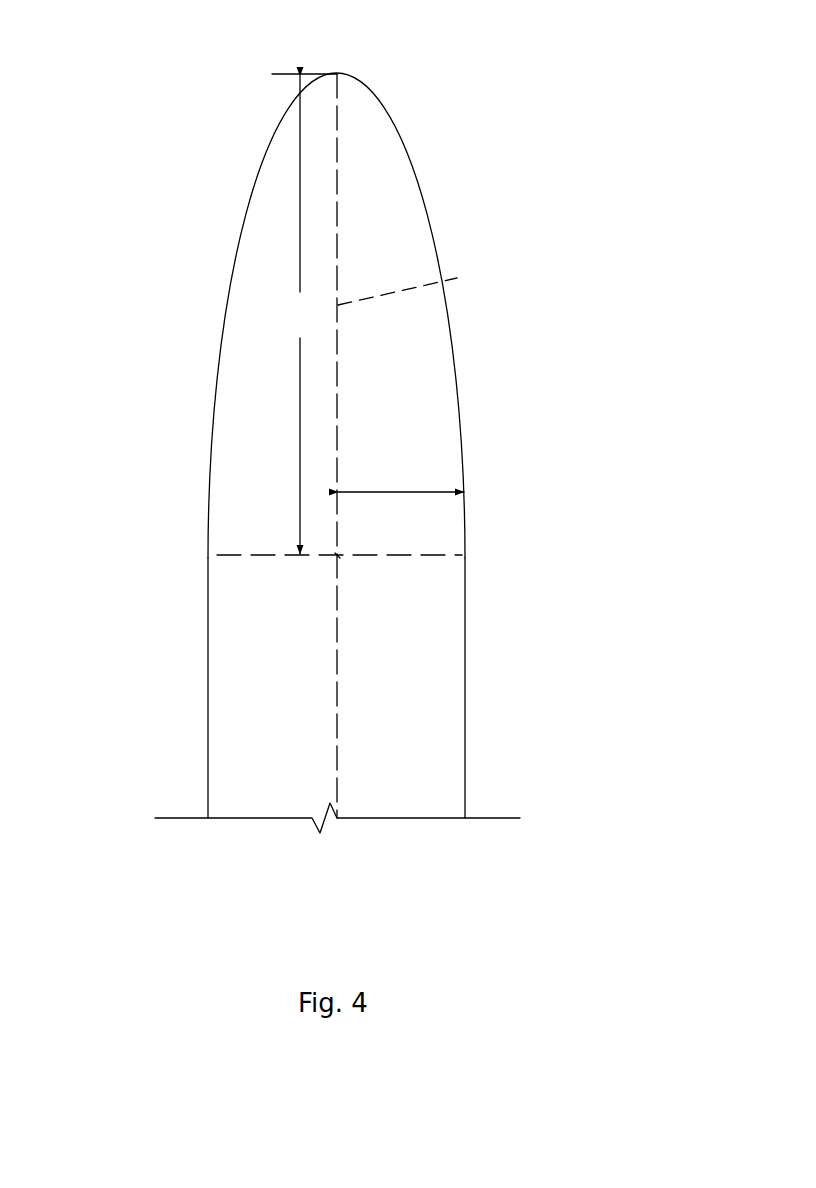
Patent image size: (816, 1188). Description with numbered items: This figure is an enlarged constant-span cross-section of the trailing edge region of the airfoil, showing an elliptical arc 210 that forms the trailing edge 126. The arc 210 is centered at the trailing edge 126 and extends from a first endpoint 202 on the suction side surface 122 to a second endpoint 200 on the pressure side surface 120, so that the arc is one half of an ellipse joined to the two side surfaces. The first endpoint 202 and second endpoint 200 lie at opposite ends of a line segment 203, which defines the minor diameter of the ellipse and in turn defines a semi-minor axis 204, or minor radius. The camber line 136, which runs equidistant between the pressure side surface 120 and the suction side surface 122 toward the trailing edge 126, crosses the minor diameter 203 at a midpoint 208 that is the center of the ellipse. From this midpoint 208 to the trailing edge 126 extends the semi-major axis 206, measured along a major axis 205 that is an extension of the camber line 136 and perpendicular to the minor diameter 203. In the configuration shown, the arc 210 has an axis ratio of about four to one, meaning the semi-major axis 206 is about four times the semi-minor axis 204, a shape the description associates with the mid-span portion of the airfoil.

The pressure side surface 120 is at (466, 745).
The suction side surface 122 is at (208, 700).
The trailing edge 126 is at (336, 72).
The camber line 136 is at (337, 710).
The second endpoint 200 is at (466, 555).
The first endpoint 202 is at (207, 555).
The line segment (minor diameter) 203 is at (263, 553).
The semi-minor axis 204 is at (401, 474).
The major axis 205 is at (427, 284).
The semi-major axis 206 is at (300, 315).
The midpoint 208 is at (341, 559).
The elliptical arc 210 is at (218, 368).